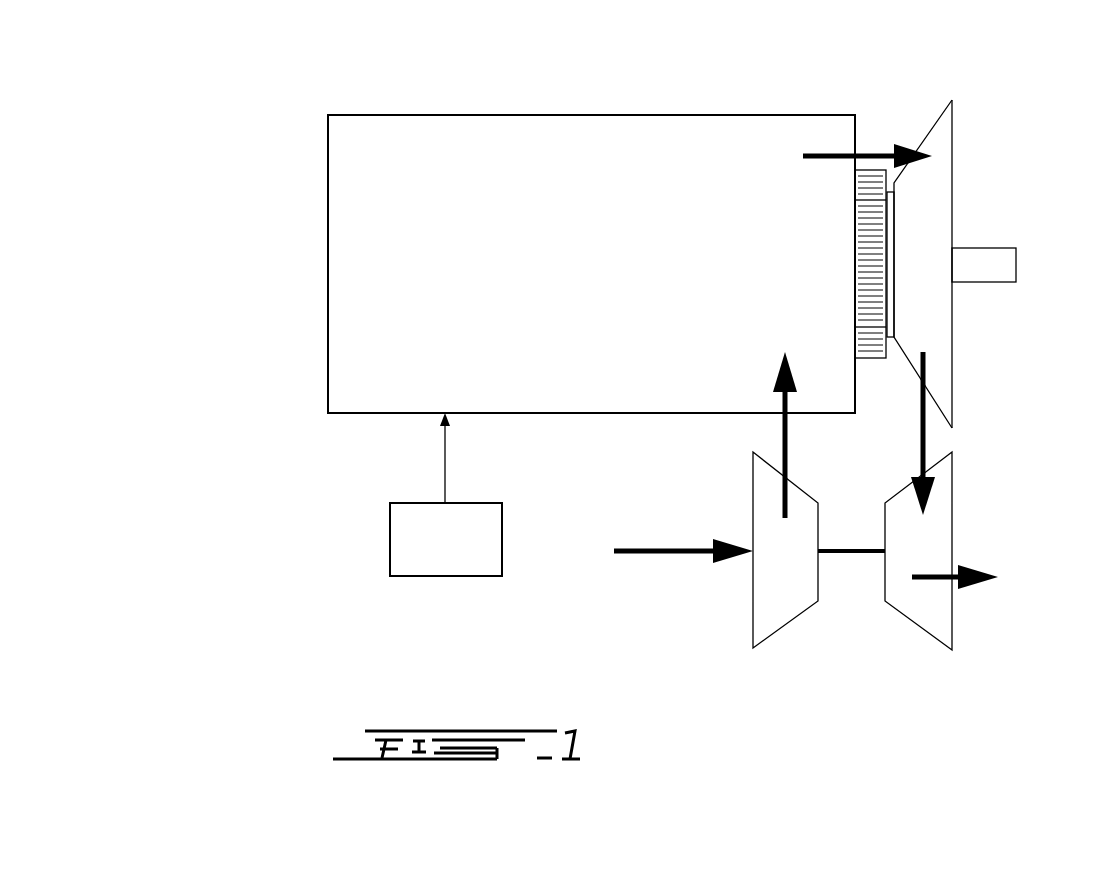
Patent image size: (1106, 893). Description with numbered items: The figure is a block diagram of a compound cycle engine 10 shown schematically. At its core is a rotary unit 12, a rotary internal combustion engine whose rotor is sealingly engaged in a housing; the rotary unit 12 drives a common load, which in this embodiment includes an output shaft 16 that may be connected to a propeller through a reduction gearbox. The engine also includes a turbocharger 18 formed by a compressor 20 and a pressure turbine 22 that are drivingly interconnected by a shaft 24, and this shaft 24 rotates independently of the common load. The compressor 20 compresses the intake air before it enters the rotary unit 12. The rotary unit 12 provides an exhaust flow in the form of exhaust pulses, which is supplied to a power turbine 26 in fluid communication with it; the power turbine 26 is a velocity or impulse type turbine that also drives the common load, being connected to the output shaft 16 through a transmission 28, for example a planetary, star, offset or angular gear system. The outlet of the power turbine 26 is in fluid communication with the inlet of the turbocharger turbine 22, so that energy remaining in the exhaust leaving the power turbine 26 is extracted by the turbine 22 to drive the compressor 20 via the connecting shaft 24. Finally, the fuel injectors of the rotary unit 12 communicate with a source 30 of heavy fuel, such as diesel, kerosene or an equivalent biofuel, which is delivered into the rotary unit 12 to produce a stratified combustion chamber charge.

The compound cycle engine 10 is at (250, 170).
The rotary unit 12 is at (483, 157).
The output shaft 16 is at (992, 262).
The turbocharger 18 is at (837, 592).
The compressor 20 is at (752, 592).
The pressure turbine 22 is at (925, 553).
The shaft 24 is at (845, 553).
The power turbine 26 is at (937, 238).
The transmission 28 is at (871, 235).
The source of heavy fuel 30 is at (443, 560).